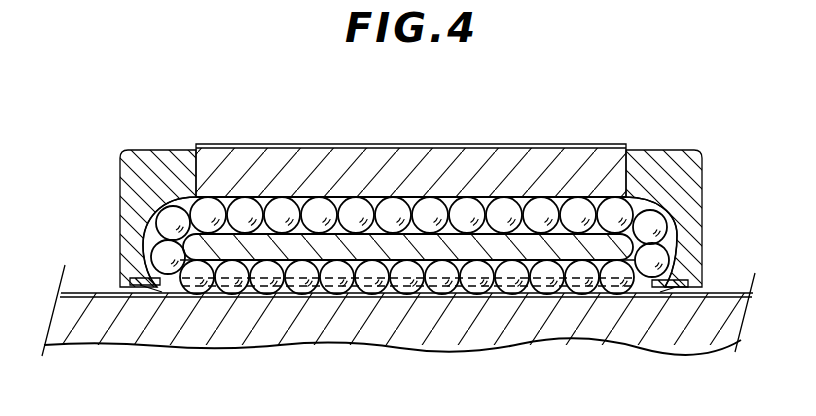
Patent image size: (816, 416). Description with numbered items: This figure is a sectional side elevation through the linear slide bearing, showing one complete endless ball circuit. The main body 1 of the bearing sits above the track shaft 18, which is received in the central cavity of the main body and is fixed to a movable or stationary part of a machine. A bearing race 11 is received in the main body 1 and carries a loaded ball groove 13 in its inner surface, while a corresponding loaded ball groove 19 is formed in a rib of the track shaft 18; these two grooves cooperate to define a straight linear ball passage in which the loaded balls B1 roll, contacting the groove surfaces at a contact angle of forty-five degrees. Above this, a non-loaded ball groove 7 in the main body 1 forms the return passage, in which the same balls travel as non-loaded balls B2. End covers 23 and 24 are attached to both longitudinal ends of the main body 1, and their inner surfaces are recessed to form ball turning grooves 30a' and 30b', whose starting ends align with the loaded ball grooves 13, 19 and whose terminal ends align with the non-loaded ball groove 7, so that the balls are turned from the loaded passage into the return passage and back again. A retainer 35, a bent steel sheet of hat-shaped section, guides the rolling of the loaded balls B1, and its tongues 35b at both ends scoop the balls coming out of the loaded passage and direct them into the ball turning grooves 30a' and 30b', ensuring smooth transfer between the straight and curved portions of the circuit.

The main body 1 is at (375, 147).
The non-loaded ball groove 7 is at (510, 205).
The bearing race 11 is at (283, 252).
The loaded ball groove 13 is at (446, 286).
The track shaft 18 is at (371, 330).
The loaded ball groove 19 is at (511, 286).
The end cover 23 is at (162, 147).
The end cover 24 is at (684, 147).
The ball turning groove 30a' is at (124, 242).
The ball turning groove 30b' is at (691, 242).
The retainer 35 is at (140, 277).
The tongue 35b is at (152, 291).
The loaded ball B1 is at (471, 286).
The non-loaded ball B2 is at (543, 208).